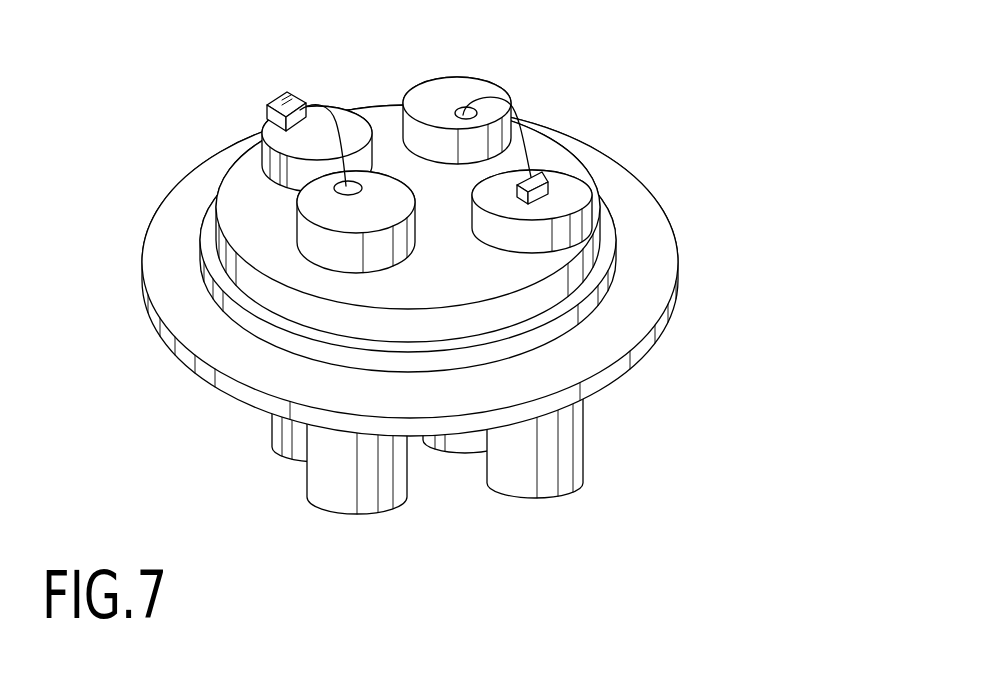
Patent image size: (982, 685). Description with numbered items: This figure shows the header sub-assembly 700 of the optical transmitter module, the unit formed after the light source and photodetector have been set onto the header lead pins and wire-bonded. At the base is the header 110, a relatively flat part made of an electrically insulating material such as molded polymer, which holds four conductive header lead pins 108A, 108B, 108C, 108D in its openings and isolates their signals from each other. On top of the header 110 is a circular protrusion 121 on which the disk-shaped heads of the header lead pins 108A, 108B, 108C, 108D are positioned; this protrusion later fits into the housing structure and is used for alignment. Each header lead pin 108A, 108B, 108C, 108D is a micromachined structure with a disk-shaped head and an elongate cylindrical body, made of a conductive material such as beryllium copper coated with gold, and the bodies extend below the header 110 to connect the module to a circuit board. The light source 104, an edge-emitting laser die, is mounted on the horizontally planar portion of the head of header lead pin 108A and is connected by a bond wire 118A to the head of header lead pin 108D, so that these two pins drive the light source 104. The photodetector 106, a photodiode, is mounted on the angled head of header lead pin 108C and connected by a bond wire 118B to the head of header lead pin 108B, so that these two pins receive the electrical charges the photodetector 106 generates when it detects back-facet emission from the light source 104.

The header sub-assembly 700 is at (472, 299).
The light source 104 is at (279, 96).
The photodetector 106 is at (556, 172).
The header 110 is at (640, 357).
The circular protrusion 121 is at (204, 185).
The bond wire 118A is at (338, 138).
The bond wire 118B is at (528, 138).
The header lead pin 108A is at (270, 432).
The header lead pin 108B is at (455, 453).
The header lead pin 108C is at (585, 462).
The header lead pin 108D is at (347, 515).